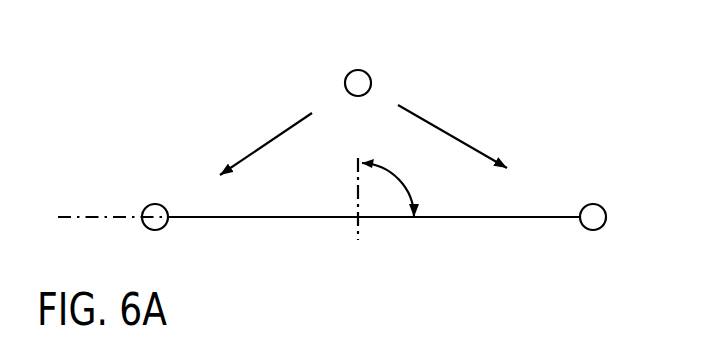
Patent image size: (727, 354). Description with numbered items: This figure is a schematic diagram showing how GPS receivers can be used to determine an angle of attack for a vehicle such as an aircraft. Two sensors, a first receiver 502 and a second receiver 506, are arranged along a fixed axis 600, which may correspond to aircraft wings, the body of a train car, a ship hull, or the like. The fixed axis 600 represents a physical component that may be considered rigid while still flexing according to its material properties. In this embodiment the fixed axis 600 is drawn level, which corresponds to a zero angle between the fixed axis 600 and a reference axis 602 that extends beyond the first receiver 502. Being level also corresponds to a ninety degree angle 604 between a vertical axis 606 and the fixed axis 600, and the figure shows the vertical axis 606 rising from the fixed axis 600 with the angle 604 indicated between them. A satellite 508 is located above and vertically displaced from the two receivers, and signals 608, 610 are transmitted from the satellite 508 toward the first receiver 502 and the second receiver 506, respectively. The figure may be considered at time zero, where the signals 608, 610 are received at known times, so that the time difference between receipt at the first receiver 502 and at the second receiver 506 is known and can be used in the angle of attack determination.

The first receiver 502 is at (157, 203).
The second receiver 506 is at (591, 204).
The satellite 508 is at (359, 69).
The fixed axis 600 is at (273, 219).
The reference axis 602 is at (113, 215).
The angle 604 is at (400, 178).
The vertical axis 606 is at (356, 188).
The signal 608 is at (268, 142).
The signal 610 is at (448, 130).